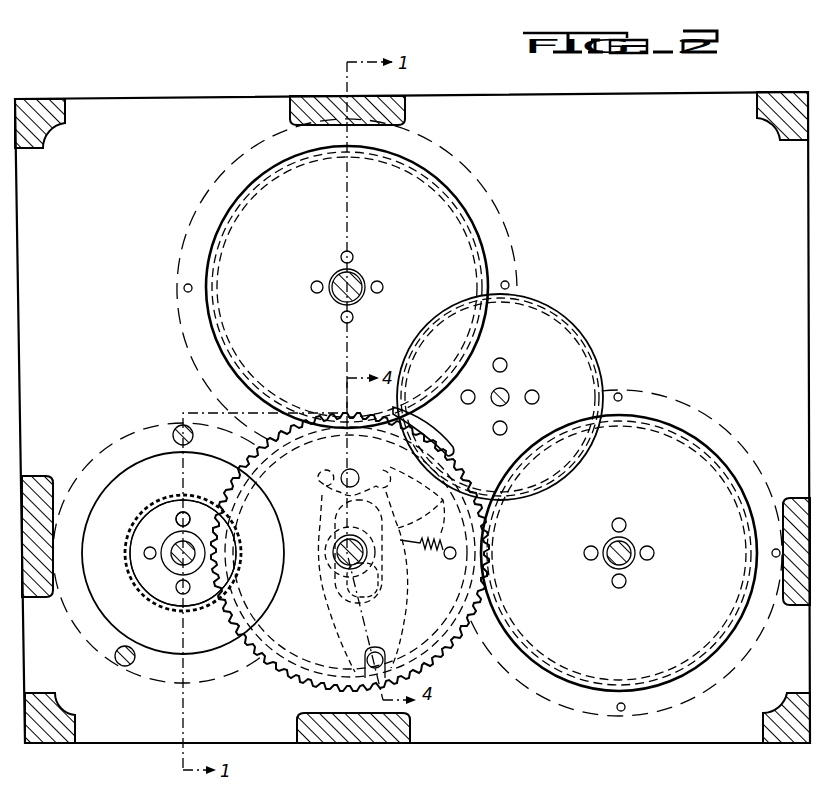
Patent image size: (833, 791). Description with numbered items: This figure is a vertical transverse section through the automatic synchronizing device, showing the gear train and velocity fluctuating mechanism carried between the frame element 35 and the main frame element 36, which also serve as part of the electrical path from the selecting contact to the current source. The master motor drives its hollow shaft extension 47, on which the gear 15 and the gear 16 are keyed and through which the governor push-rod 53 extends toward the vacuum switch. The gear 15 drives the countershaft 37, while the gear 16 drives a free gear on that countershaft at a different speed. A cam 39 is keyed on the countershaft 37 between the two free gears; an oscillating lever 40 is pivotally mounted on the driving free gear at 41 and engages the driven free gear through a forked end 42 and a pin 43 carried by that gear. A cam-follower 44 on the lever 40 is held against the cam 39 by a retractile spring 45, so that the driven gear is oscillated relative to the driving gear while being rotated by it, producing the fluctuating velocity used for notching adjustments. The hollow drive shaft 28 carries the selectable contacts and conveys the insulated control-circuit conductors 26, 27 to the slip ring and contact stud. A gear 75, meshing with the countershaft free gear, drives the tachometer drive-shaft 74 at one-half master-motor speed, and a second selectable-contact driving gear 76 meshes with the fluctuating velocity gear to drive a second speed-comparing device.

The gear 15 is at (196, 500).
The gear 16 is at (178, 500).
The insulated control-circuit conductor 26 is at (338, 282).
The insulated control-circuit conductor 27 is at (356, 298).
The hollow drive shaft 28 is at (360, 280).
The frame element 35 is at (508, 215).
The main frame element 36 is at (405, 108).
The countershaft 37 is at (338, 548).
The cam 39 is at (400, 527).
The oscillating lever 40 is at (345, 612).
The pivot 41 is at (340, 487).
The forked end 42 is at (325, 688).
The pin 43 is at (410, 677).
The cam-follower 44 is at (335, 580).
The retractile spring 45 is at (428, 562).
The hollow shaft extension 47 is at (186, 559).
The push-rod 53 is at (185, 553).
The drive-shaft 74 is at (505, 391).
The gear 75 is at (570, 340).
The second selectable-contact driving gear 76 is at (680, 450).